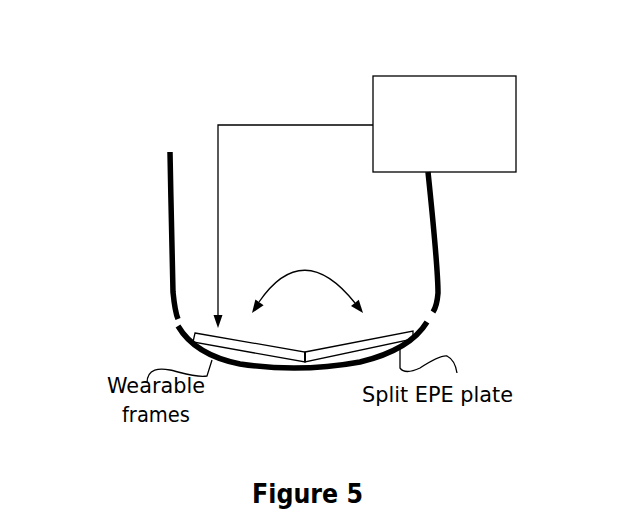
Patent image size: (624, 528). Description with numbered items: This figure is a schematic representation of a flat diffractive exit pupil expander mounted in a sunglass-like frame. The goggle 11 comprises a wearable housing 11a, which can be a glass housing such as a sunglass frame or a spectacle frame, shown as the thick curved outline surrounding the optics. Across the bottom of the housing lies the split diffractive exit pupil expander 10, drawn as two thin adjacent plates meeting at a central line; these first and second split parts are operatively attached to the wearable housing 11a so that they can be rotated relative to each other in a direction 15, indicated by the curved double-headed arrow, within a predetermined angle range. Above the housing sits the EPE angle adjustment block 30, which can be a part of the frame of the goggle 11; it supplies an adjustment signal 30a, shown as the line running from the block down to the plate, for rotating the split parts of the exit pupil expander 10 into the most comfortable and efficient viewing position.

The goggle 11 is at (246, 65).
The wearable housing 11a is at (170, 227).
The EPE angle adjustment block 30 is at (520, 120).
The adjustment signal 30a is at (218, 147).
The direction of rotation 15 is at (303, 263).
The split diffractive exit pupil expander 10 is at (388, 316).